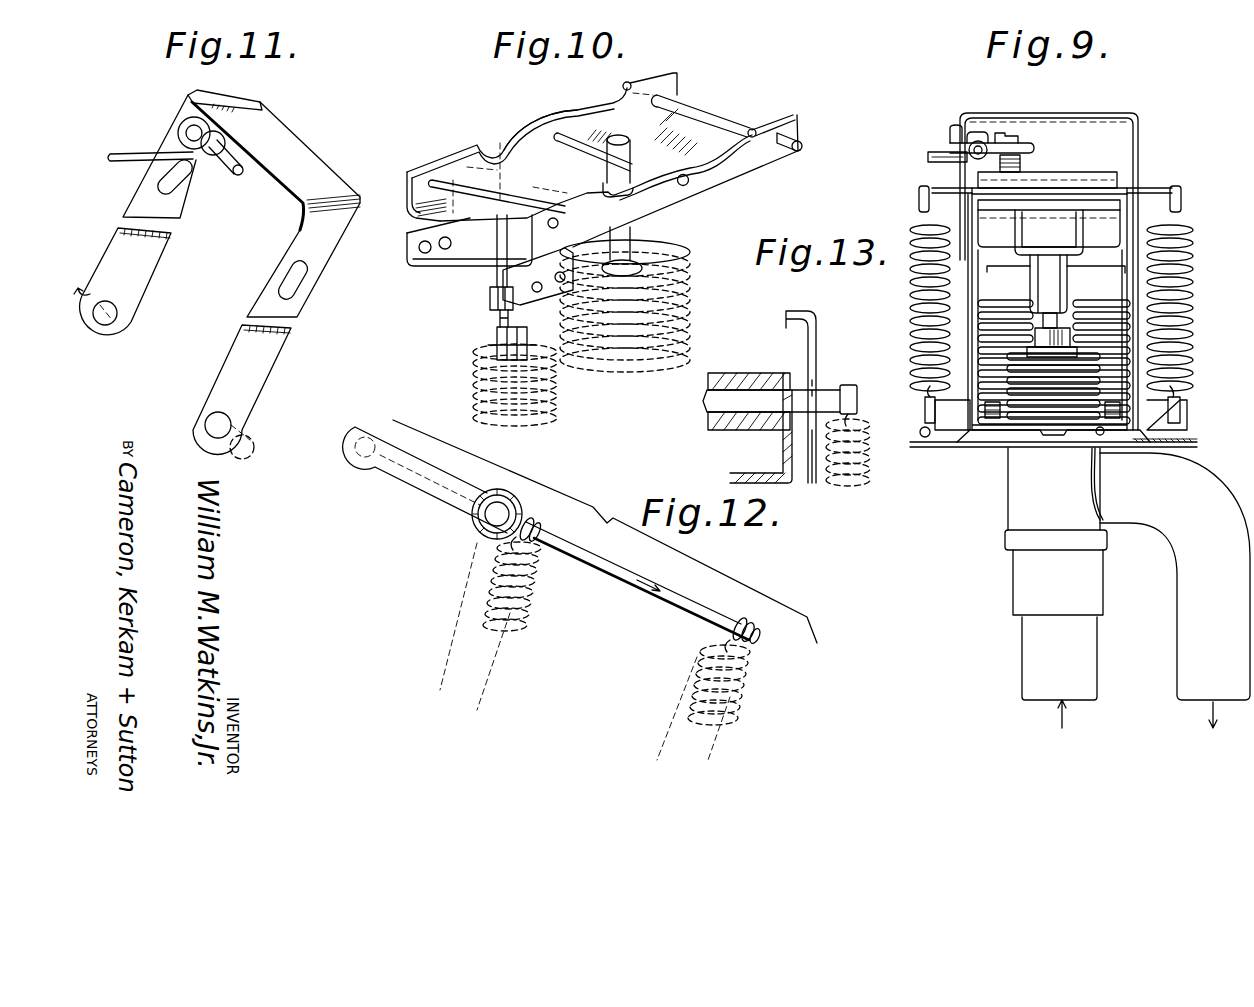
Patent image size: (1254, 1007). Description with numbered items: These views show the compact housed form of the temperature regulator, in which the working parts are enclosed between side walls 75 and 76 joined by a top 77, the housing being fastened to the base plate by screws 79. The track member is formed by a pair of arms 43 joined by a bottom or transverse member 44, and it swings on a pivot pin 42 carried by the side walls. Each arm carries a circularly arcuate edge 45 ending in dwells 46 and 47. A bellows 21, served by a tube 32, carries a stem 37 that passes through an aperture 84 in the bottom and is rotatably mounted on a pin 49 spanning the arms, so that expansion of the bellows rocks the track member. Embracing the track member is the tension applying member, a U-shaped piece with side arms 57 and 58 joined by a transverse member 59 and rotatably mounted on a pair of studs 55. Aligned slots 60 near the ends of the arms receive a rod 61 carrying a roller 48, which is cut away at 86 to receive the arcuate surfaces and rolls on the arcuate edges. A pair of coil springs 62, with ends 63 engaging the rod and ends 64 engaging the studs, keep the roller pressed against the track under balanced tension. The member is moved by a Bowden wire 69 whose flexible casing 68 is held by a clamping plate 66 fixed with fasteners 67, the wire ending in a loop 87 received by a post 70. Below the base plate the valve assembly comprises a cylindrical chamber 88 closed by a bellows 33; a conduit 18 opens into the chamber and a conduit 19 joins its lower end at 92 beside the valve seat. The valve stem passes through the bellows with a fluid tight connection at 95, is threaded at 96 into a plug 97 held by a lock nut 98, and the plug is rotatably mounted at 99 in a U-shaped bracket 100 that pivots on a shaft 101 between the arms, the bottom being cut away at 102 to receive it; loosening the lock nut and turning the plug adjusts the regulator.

In FIG. 9, the conduit 18 is at (1190, 475).
In FIG. 9, the conduit 19 is at (1022, 665).
In FIG. 10, the bellows 21 is at (690, 303).
In FIG. 9, the bellows 21 is at (1100, 312).
In FIG. 9, the tube 32 is at (926, 440).
In FIG. 10, the bellows 33 is at (558, 408).
In FIG. 9, the bellows 33 is at (1100, 368).
In FIG. 10, the stem 37 is at (633, 245).
In FIG. 10, the pivot pin 42 is at (802, 146).
In FIG. 10, the arms 43 is at (525, 138).
In FIG. 13, the arms 43 is at (810, 481).
In FIG. 9, the arms 43 is at (1135, 240).
In FIG. 10, the transverse member 44 is at (706, 128).
In FIG. 13, the transverse member 44 is at (741, 473).
In FIG. 10, the arcuate edge 45 is at (563, 117).
In FIG. 10, the dwell 46 is at (490, 152).
In FIG. 10, the dwell 47 is at (625, 83).
In FIG. 13, the roller 48 is at (735, 373).
In FIG. 12, the roller 48 is at (430, 503).
In FIG. 9, the roller 48 is at (1067, 177).
In FIG. 10, the pin 49 is at (575, 148).
In FIG. 11, the studs 55 is at (270, 430).
In FIG. 9, the studs 55 is at (940, 420).
In FIG. 11, the side arm 57 is at (150, 259).
In FIG. 9, the side arm 57 is at (953, 130).
In FIG. 11, the side arm 58 is at (339, 233).
In FIG. 13, the side arm 58 is at (818, 331).
In FIG. 9, the side arm 58 is at (1138, 140).
In FIG. 11, the transverse member 59 is at (297, 152).
In FIG. 9, the transverse member 59 is at (1022, 117).
In FIG. 11, the slots 60 is at (182, 190).
In FIG. 13, the slots 60 is at (819, 376).
In FIG. 13, the rod 61 is at (849, 388).
In FIG. 12, the rod 61 is at (673, 603).
In FIG. 9, the rod 61 is at (1153, 188).
In FIG. 13, the coil springs 62 is at (870, 472).
In FIG. 12, the coil springs 62 is at (517, 650).
In FIG. 9, the coil springs 62 is at (912, 308).
In FIG. 13, the spring end 63 is at (848, 421).
In FIG. 12, the spring end 63 is at (533, 563).
In FIG. 9, the spring end 63 is at (919, 206).
In FIG. 9, the spring end 64 is at (922, 398).
In FIG. 9, the clamping plate 66 is at (972, 132).
In FIG. 9, the fastening means 67 is at (1010, 136).
In FIG. 9, the flexible casing 68 is at (967, 160).
In FIG. 11, the wire 69 is at (132, 153).
In FIG. 9, the wire 69 is at (984, 141).
In FIG. 11, the post 70 is at (224, 177).
In FIG. 9, the post 70 is at (1035, 150).
In FIG. 9, the side wall 75 is at (1133, 337).
In FIG. 9, the side wall 76 is at (972, 341).
In FIG. 9, the top 77 is at (1090, 187).
In FIG. 9, the screws 79 is at (990, 443).
In FIG. 10, the aperture 84 is at (607, 177).
In FIG. 13, the cut away 86 is at (787, 372).
In FIG. 12, the cut away 86 is at (358, 428).
In FIG. 9, the cut away 86 is at (1120, 177).
In FIG. 11, the loop 87 is at (224, 142).
In FIG. 9, the cylindrical chamber 88 is at (1008, 506).
In FIG. 9, the connection point 92 is at (1005, 543).
In FIG. 10, the fluid tight connection 95 is at (528, 334).
In FIG. 9, the fluid tight connection 95 is at (1047, 333).
In FIG. 10, the threaded end 96 is at (497, 341).
In FIG. 9, the threaded end 96 is at (1077, 340).
In FIG. 10, the plug 97 is at (490, 299).
In FIG. 9, the plug 97 is at (1067, 277).
In FIG. 10, the lock nut 98 is at (500, 320).
In FIG. 9, the lock nut 98 is at (1057, 320).
In FIG. 10, the rotatable mounting 99 is at (495, 279).
In FIG. 9, the rotatable mounting 99 is at (1068, 250).
In FIG. 10, the U-shaped bracket 100 is at (500, 262).
In FIG. 9, the U-shaped bracket 100 is at (1108, 237).
In FIG. 10, the shaft 101 is at (438, 180).
In FIG. 9, the shaft 101 is at (1037, 220).
In FIG. 9, the cut away 102 is at (1049, 232).